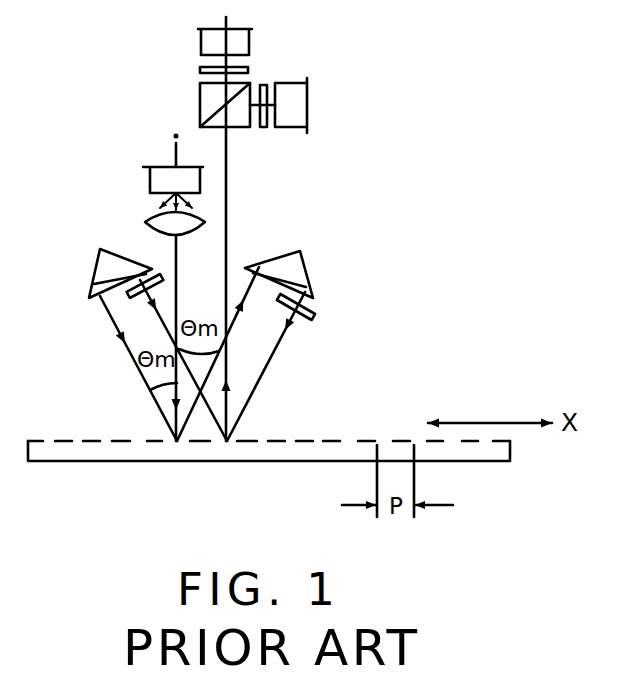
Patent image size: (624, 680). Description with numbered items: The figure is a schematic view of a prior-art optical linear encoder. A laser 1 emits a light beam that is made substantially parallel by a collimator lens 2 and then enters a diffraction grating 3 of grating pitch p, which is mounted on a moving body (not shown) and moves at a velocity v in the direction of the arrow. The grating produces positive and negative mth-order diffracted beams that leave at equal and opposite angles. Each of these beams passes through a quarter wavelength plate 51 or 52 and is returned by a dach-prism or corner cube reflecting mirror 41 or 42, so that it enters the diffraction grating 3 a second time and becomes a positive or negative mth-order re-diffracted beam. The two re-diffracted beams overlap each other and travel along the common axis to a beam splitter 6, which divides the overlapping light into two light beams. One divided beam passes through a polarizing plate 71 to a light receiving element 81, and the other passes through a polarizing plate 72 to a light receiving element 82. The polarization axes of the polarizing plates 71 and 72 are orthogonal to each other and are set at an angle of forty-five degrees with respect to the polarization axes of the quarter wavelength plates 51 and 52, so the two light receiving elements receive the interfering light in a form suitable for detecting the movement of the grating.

The laser 1 is at (160, 180).
The collimator lens 2 is at (160, 220).
The diffraction grating 3 is at (492, 453).
The beam splitter 6 is at (208, 100).
The corner cube reflecting mirror 41 is at (102, 267).
The corner cube reflecting mirror 42 is at (295, 263).
The quarter wavelength plate 51 is at (130, 297).
The quarter wavelength plate 52 is at (313, 313).
The polarizing plate 71 is at (247, 70).
The polarizing plate 72 is at (264, 128).
The light receiving element 81 is at (205, 44).
The light receiving element 82 is at (293, 107).